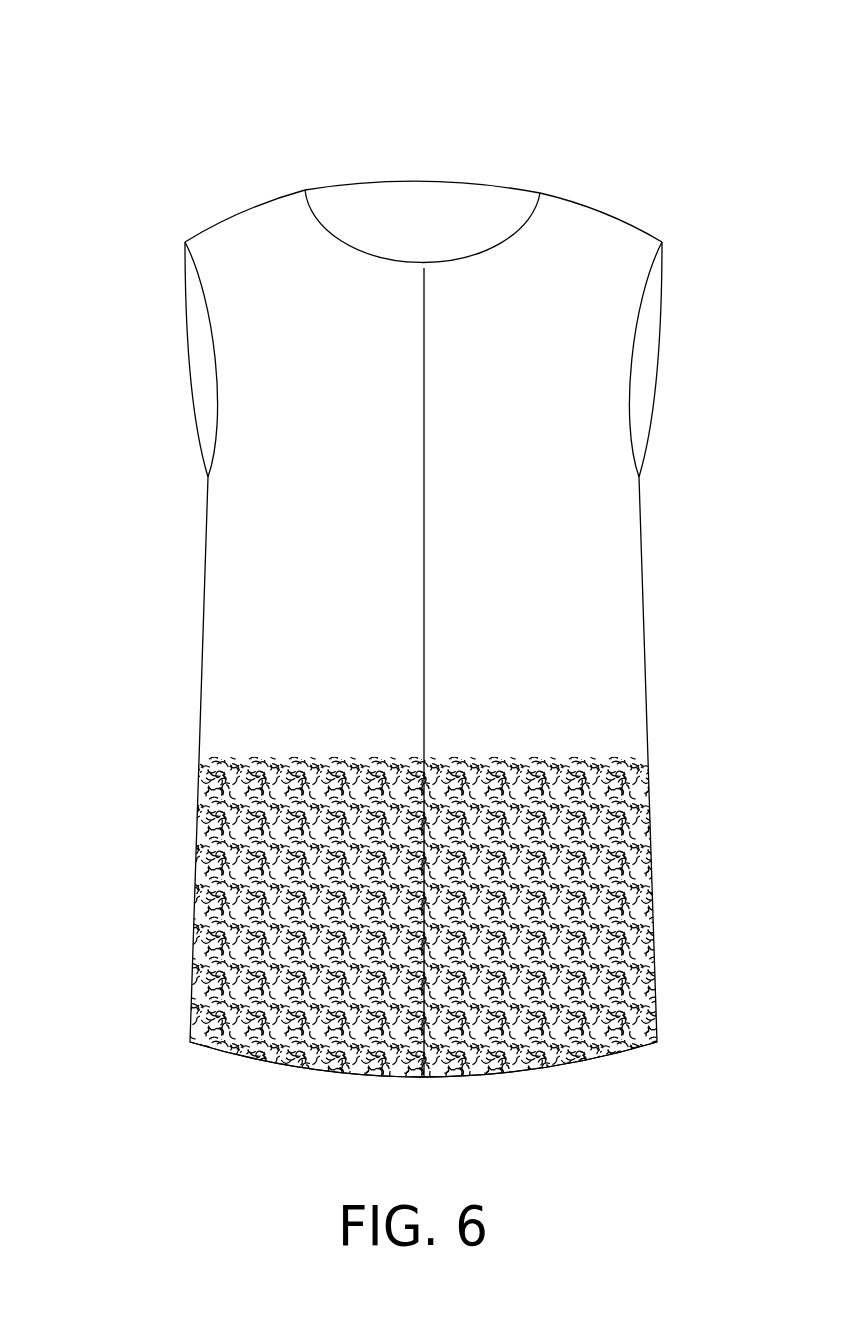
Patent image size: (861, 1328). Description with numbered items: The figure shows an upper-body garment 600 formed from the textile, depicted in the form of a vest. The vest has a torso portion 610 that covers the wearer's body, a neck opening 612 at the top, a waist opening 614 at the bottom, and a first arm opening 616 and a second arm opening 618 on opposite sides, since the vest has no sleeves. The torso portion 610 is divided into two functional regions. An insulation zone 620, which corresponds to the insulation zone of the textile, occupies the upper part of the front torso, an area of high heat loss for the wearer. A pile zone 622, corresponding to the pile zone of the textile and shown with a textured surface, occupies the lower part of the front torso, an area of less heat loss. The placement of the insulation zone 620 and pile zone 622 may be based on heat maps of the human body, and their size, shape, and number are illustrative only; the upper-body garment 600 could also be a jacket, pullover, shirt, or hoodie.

The upper-body garment 600 is at (66, 77).
The torso portion 610 is at (571, 266).
The neck opening 612 is at (427, 202).
The waist opening 614 is at (291, 1102).
The first arm opening 616 is at (190, 329).
The second arm opening 618 is at (659, 329).
The insulation zone 620 is at (302, 553).
The pile zone 622 is at (173, 762).